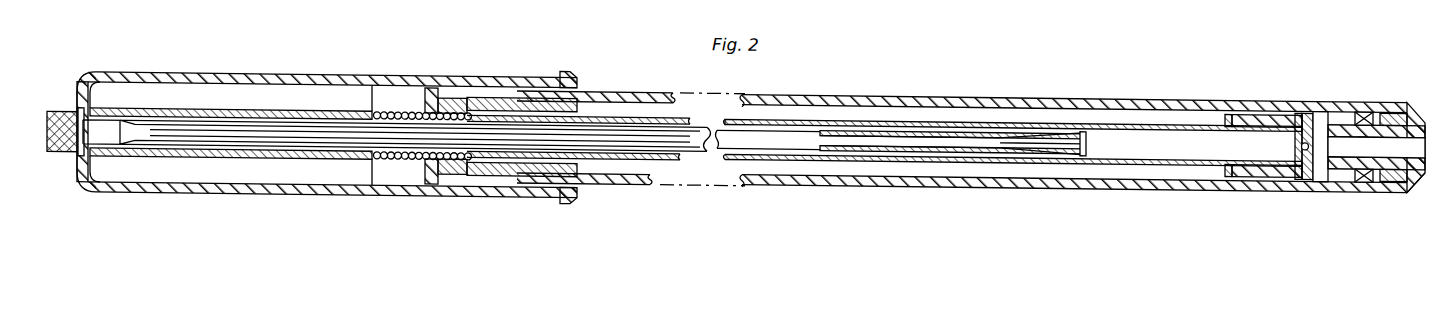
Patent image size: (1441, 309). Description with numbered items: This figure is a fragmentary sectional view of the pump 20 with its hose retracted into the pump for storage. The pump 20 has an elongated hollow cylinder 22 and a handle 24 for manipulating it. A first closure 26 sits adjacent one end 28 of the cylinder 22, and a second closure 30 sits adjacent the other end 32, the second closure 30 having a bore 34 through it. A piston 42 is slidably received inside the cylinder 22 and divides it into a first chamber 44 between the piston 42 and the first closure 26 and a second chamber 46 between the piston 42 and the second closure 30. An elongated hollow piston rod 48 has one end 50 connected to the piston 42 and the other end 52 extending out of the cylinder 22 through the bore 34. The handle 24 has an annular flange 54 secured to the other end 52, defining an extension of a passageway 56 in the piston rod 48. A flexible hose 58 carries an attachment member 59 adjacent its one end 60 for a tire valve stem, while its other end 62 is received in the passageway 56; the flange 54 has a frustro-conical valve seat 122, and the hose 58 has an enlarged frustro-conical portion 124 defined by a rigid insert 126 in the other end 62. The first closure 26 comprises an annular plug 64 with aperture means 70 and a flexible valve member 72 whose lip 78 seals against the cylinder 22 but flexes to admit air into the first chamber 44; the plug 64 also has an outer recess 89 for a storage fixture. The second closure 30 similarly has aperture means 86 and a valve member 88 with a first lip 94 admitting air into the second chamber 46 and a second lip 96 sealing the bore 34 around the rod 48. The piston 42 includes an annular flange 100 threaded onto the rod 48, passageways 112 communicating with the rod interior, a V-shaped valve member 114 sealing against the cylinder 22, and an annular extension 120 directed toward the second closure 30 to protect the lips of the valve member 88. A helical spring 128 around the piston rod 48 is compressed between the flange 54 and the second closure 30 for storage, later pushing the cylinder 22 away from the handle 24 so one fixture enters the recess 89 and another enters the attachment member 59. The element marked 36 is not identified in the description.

The pump 20 is at (1133, 84).
The cylinder 22 is at (953, 87).
The handle 24 is at (297, 72).
The first closure 26 is at (1424, 86).
The one end of the cylinder 28 is at (1380, 167).
The second closure 30 is at (417, 93).
The other end of the cylinder 32 is at (468, 112).
The bore 34 is at (460, 126).
The outer sheath 36 is at (820, 86).
The piston 42 is at (1290, 99).
The first chamber 44 is at (1345, 103).
The second chamber 46 is at (890, 108).
The piston rod 48 is at (1115, 155).
The one end of the piston rod 50 is at (1223, 157).
The other end of the piston rod 52 is at (193, 157).
The annular flange 54 is at (233, 81).
The passageway 56 is at (1165, 147).
The hose 58 is at (690, 146).
The attachment member 59 is at (63, 153).
The one end of the hose 60 is at (116, 107).
The other end of the hose 62 is at (1012, 142).
The annular plug 64 is at (1420, 137).
The aperture means 70 is at (1393, 96).
The valve member 72 is at (1355, 165).
The annular flexible lip 78 is at (1308, 172).
The aperture means 86 is at (452, 99).
The valve member 88 is at (497, 105).
The recess 89 is at (1430, 140).
The first annular flexible lip 94 is at (537, 92).
The second annular lip 96 is at (587, 87).
The annular flange 100 is at (1262, 102).
The passageways 112 is at (1301, 133).
The V-shaped valve member 114 is at (1320, 97).
The annular extension 120 is at (1245, 99).
The valve seat 122 is at (157, 114).
The enlarged portion 124 is at (1068, 118).
The rigid insert 126 is at (1085, 134).
The helical spring 128 is at (392, 157).